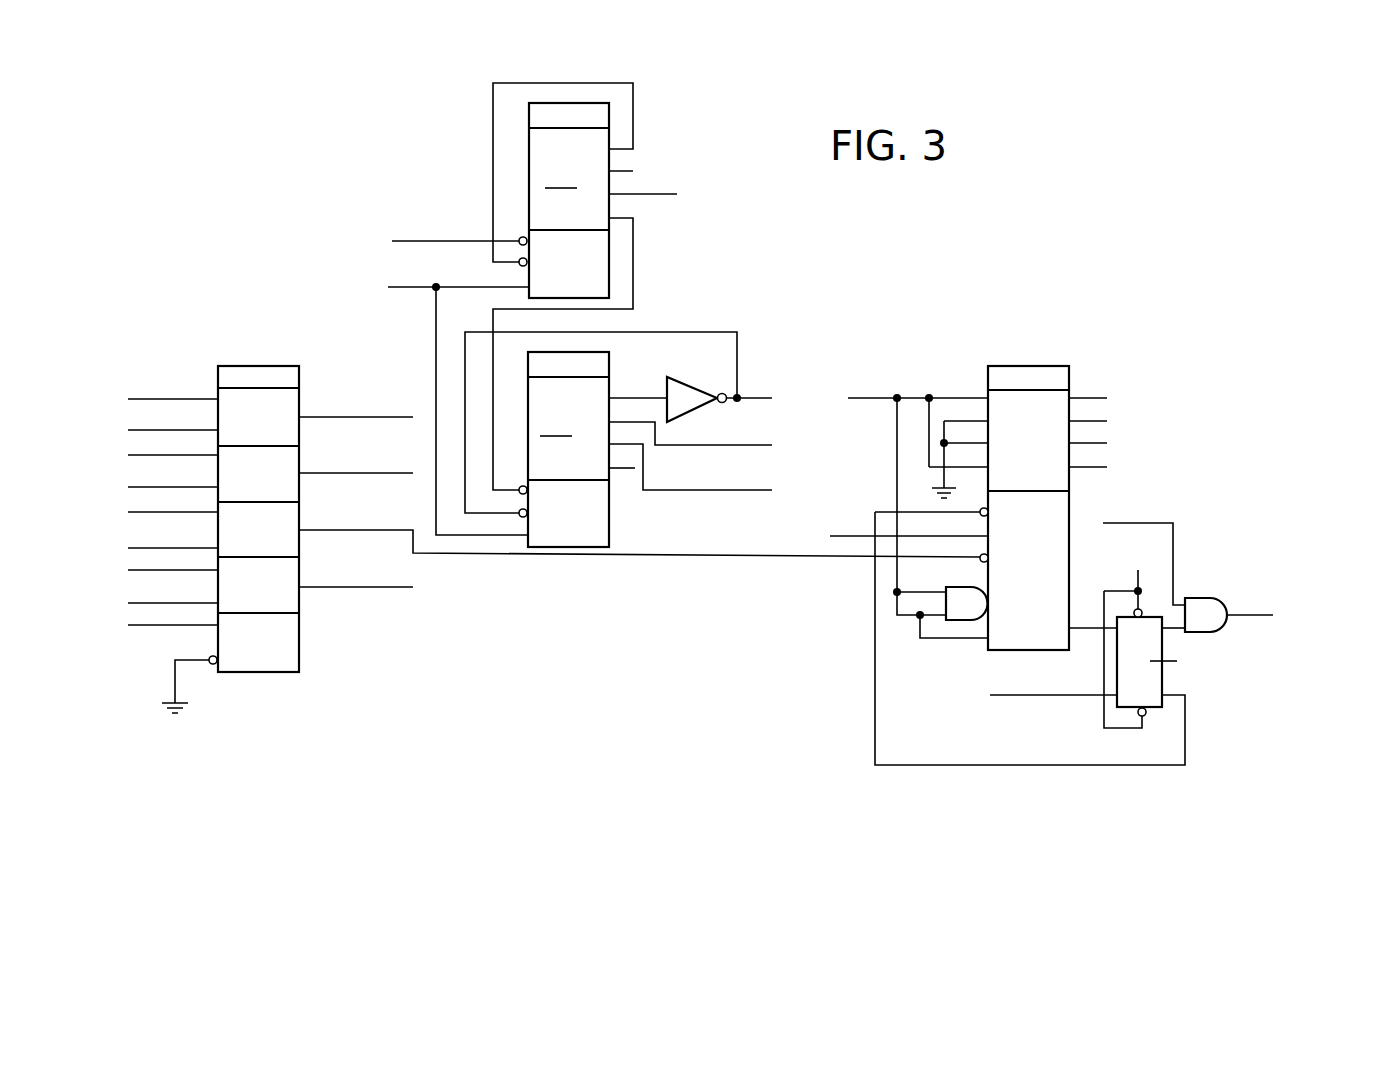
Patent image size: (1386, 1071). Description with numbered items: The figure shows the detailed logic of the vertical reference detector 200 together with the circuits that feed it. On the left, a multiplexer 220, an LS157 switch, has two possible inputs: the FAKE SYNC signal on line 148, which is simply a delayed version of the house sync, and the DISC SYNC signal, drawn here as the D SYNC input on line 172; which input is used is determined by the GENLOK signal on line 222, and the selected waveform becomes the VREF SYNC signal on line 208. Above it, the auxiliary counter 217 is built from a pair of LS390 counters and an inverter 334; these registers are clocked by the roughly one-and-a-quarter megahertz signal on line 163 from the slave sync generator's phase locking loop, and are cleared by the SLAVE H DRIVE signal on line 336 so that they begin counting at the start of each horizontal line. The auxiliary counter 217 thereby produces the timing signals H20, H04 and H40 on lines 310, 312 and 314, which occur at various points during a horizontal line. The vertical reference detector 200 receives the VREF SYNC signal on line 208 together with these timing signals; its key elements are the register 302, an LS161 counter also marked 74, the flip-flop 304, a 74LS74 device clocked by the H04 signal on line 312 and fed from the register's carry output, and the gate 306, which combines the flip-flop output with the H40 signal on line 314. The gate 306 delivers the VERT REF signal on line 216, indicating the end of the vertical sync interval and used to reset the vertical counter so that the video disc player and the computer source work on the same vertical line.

The auxiliary counter 217 is at (331, 177).
The 1.2587 MHz signal line 163 is at (481, 240).
The H04 timing signal line 312 is at (660, 196).
The SLAVE H DRIVE signal line 336 is at (425, 289).
The multiplexer 220 is at (245, 366).
The FAKE SYNC signal line 148 is at (136, 513).
The D sync signal 172 is at (139, 548).
The GENLOK signal line 222 is at (153, 628).
The VREF SYNC signal line 208 is at (313, 531).
The inverter 334 is at (698, 388).
The H20 timing signal line 310 is at (659, 448).
The H40 timing signal line 314 is at (665, 493).
The LS161 counter 74 is at (991, 366).
The register 302 is at (1009, 549).
The gate 306 is at (1202, 598).
The VERT REF signal line 216 is at (1253, 618).
The flip-flop 304 is at (1163, 682).
The vertical reference detector 200 is at (1037, 800).